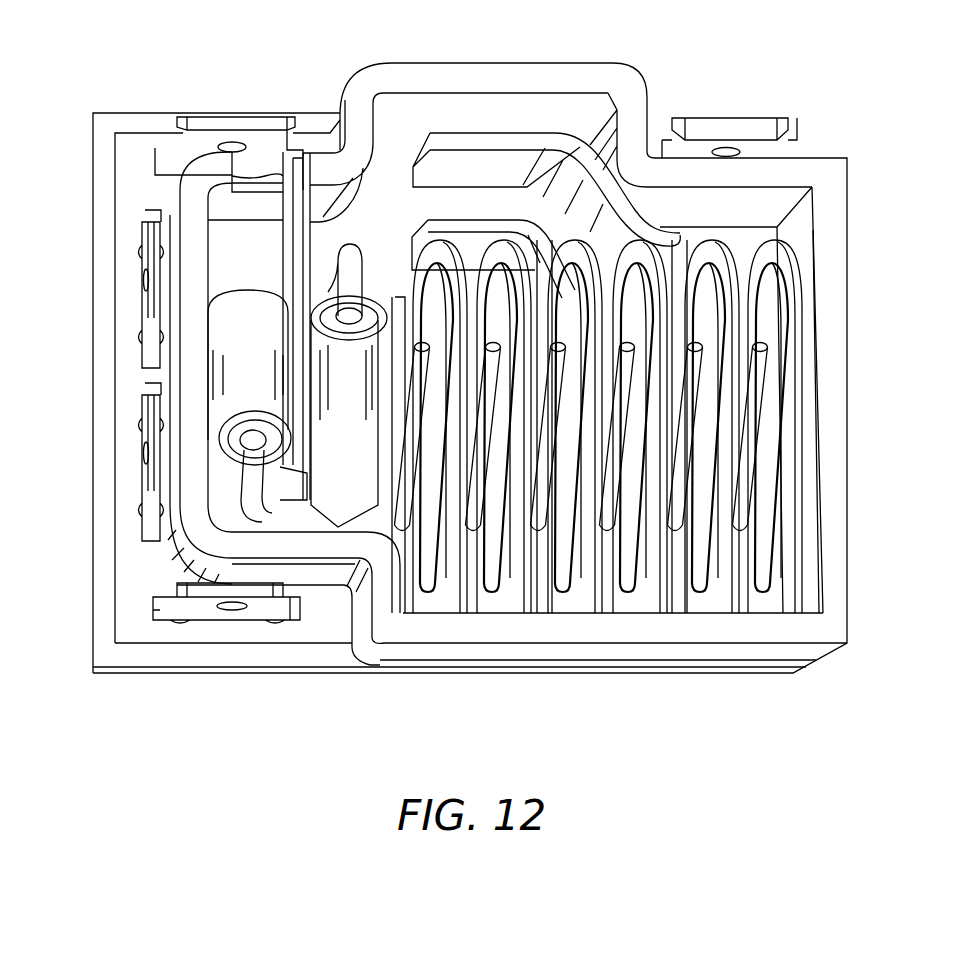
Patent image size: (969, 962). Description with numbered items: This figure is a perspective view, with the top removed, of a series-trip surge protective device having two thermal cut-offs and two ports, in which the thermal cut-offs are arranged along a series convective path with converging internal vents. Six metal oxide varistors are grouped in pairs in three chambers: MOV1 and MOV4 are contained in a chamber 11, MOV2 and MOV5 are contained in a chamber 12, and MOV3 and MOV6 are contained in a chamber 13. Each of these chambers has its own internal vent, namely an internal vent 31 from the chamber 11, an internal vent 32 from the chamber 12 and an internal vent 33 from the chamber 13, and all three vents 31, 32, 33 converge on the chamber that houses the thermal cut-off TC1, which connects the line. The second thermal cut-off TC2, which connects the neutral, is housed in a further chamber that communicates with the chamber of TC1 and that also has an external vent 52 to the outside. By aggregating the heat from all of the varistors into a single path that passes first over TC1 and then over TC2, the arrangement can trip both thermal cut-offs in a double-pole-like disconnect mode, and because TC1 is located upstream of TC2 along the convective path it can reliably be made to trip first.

The external vent 52 is at (262, 200).
The thermal cut-off TC1 is at (323, 450).
The thermal cut-off TC2 is at (233, 362).
The internal vent 31 is at (400, 274).
The internal vent 32 is at (448, 216).
The internal vent 33 is at (440, 174).
The chamber 11 is at (462, 598).
The chamber 12 is at (603, 600).
The chamber 13 is at (743, 600).
The metal oxide varistor MOV1 is at (417, 530).
The metal oxide varistor MOV2 is at (567, 298).
The metal oxide varistor MOV3 is at (708, 300).
The metal oxide varistor MOV4 is at (493, 532).
The metal oxide varistor MOV5 is at (638, 298).
The metal oxide varistor MOV6 is at (767, 527).